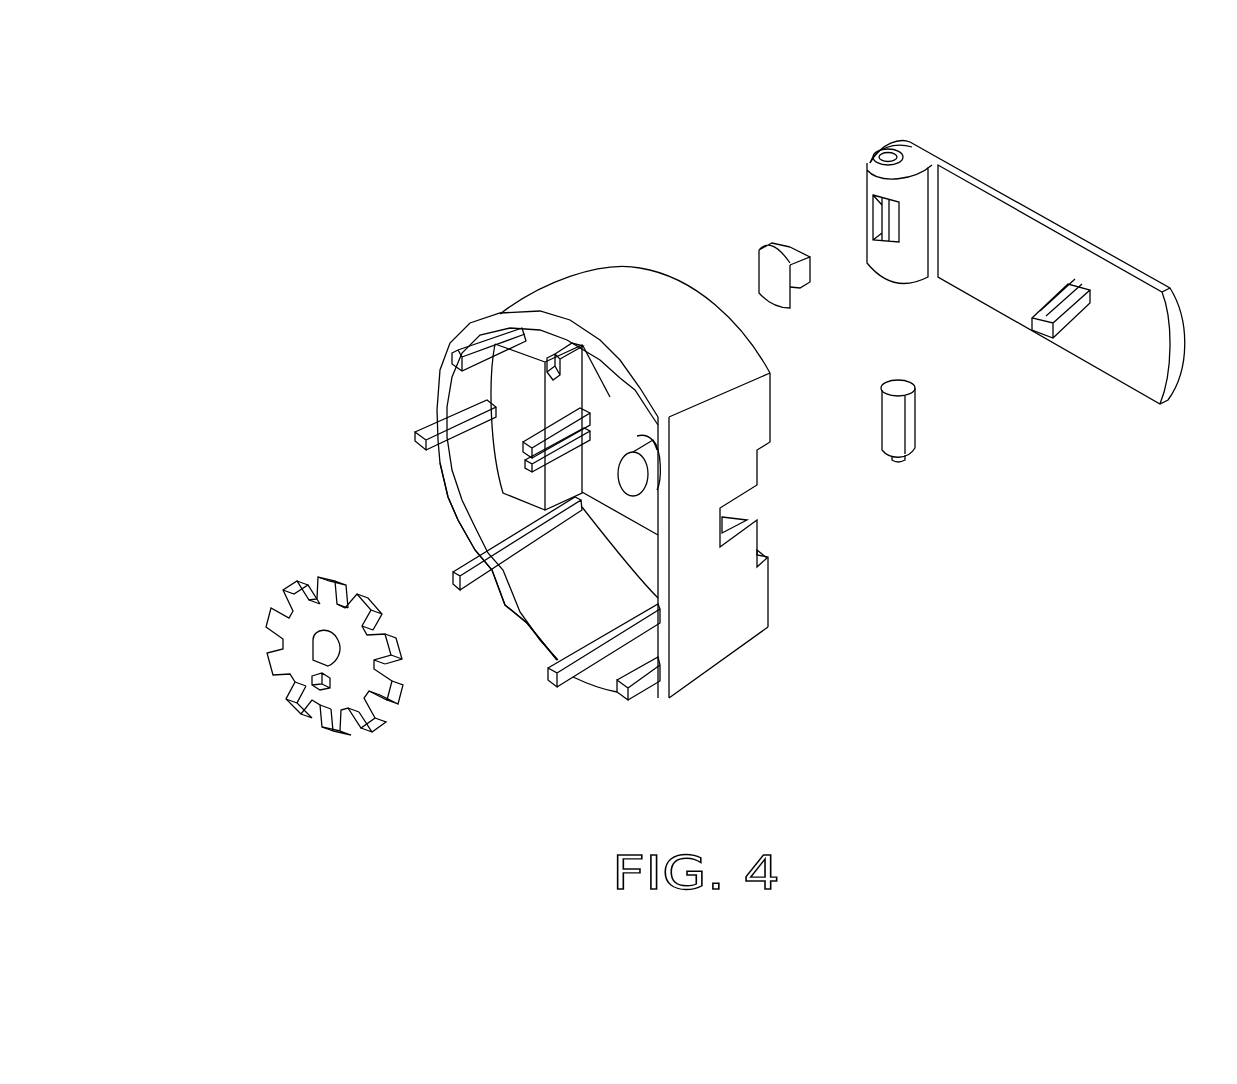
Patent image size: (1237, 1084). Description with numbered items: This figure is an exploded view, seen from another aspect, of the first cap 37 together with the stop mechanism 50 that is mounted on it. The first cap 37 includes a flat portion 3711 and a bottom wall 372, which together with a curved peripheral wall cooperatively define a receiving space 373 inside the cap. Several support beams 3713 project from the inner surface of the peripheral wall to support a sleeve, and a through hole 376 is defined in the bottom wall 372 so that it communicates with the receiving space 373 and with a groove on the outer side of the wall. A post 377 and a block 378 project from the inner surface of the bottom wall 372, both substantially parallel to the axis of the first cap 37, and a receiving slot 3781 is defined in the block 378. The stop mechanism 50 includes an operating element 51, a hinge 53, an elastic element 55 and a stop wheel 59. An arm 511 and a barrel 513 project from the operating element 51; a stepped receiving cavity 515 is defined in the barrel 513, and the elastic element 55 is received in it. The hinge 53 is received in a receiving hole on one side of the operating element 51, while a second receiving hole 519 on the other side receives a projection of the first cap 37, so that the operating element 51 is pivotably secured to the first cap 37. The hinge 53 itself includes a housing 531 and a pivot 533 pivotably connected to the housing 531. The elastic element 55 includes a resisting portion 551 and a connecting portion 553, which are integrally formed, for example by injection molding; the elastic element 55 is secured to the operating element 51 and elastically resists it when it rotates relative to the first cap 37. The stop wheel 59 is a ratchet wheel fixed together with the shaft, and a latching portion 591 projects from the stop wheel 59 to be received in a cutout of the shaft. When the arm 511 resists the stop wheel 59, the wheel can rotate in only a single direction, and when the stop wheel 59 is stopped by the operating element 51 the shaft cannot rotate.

The first cap 37 is at (623, 188).
The bottom wall 372 is at (562, 375).
The receiving space 373 is at (553, 602).
The through hole 376 is at (747, 505).
The post 377 is at (633, 477).
The block 378 is at (540, 437).
The receiving slot 3781 is at (535, 452).
The flat portion 3711 is at (723, 595).
The support beams 3713 is at (567, 680).
The stop mechanism 50 is at (828, 104).
The operating element 51 is at (1028, 213).
The arm 511 is at (1072, 283).
The barrel 513 is at (903, 267).
The stepped receiving cavity 515 is at (883, 220).
The second receiving hole 519 is at (890, 155).
The hinge 53 is at (1014, 426).
The housing 531 is at (908, 413).
The pivot 533 is at (903, 458).
The elastic element 55 is at (810, 171).
The resisting portion 551 is at (768, 250).
The connecting portion 553 is at (793, 247).
The stop wheel 59 is at (297, 640).
The latching portion 591 is at (310, 683).